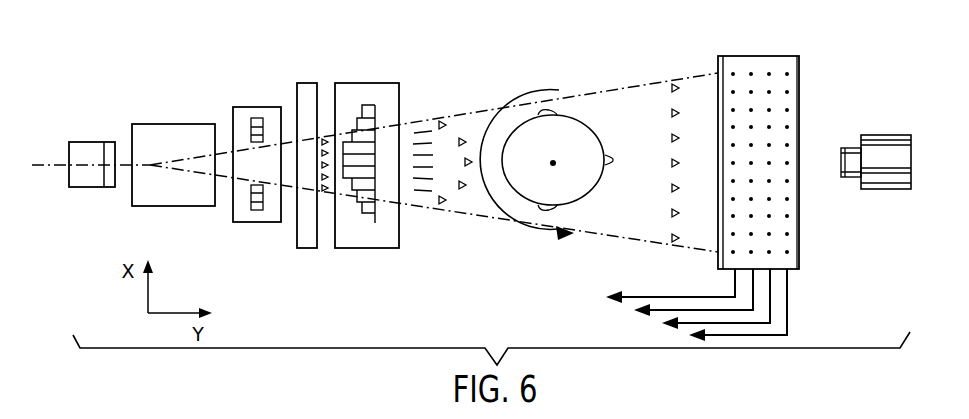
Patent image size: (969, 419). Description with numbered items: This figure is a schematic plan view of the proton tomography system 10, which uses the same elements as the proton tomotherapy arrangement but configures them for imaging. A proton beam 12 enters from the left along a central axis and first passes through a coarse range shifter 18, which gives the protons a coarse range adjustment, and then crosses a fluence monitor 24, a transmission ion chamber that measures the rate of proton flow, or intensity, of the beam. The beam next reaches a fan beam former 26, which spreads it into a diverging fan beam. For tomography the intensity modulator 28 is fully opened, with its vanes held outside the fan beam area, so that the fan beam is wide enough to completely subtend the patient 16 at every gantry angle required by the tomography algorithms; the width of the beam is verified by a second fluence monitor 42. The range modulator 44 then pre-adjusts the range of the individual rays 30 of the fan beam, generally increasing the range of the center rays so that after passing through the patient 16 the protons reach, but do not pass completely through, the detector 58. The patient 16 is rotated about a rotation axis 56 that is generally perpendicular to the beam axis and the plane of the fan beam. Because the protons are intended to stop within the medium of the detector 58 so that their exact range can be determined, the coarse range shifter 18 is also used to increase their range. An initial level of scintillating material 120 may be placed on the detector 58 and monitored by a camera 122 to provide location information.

The proton tomography system 10 is at (435, 66).
The proton beam 12 is at (50, 162).
The patient 16 is at (568, 132).
The coarse range shifter 18 is at (93, 142).
The fluence monitor 24 is at (113, 142).
The fan beam former 26 is at (178, 208).
The intensity modulator 28 is at (257, 106).
The rays 30 is at (420, 178).
The fluence monitor 42 is at (308, 82).
The range modulator 44 is at (370, 82).
The rotation axis 56 is at (555, 163).
The detector 58 is at (800, 242).
The scintillating material 120 is at (718, 64).
The camera 122 is at (882, 143).